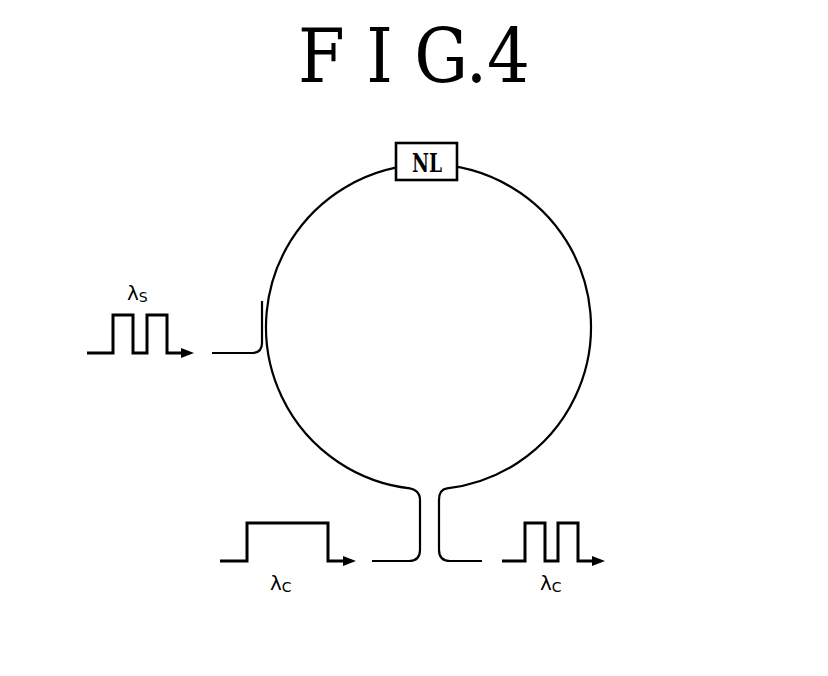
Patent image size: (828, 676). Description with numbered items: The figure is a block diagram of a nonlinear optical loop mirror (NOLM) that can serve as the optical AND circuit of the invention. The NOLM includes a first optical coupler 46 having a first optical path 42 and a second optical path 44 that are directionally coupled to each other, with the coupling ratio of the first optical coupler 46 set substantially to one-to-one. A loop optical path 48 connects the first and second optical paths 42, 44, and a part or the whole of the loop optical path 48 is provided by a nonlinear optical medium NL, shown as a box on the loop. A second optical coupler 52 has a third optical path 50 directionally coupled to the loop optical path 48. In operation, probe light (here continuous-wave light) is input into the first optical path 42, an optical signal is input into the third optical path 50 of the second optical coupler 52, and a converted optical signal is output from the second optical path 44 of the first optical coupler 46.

The first optical path 42 is at (420, 534).
The second optical path 44 is at (439, 534).
The first optical coupler 46 is at (417, 516).
The loop optical path 48 is at (572, 376).
The third optical path 50 is at (261, 338).
The second optical coupler 52 is at (250, 312).